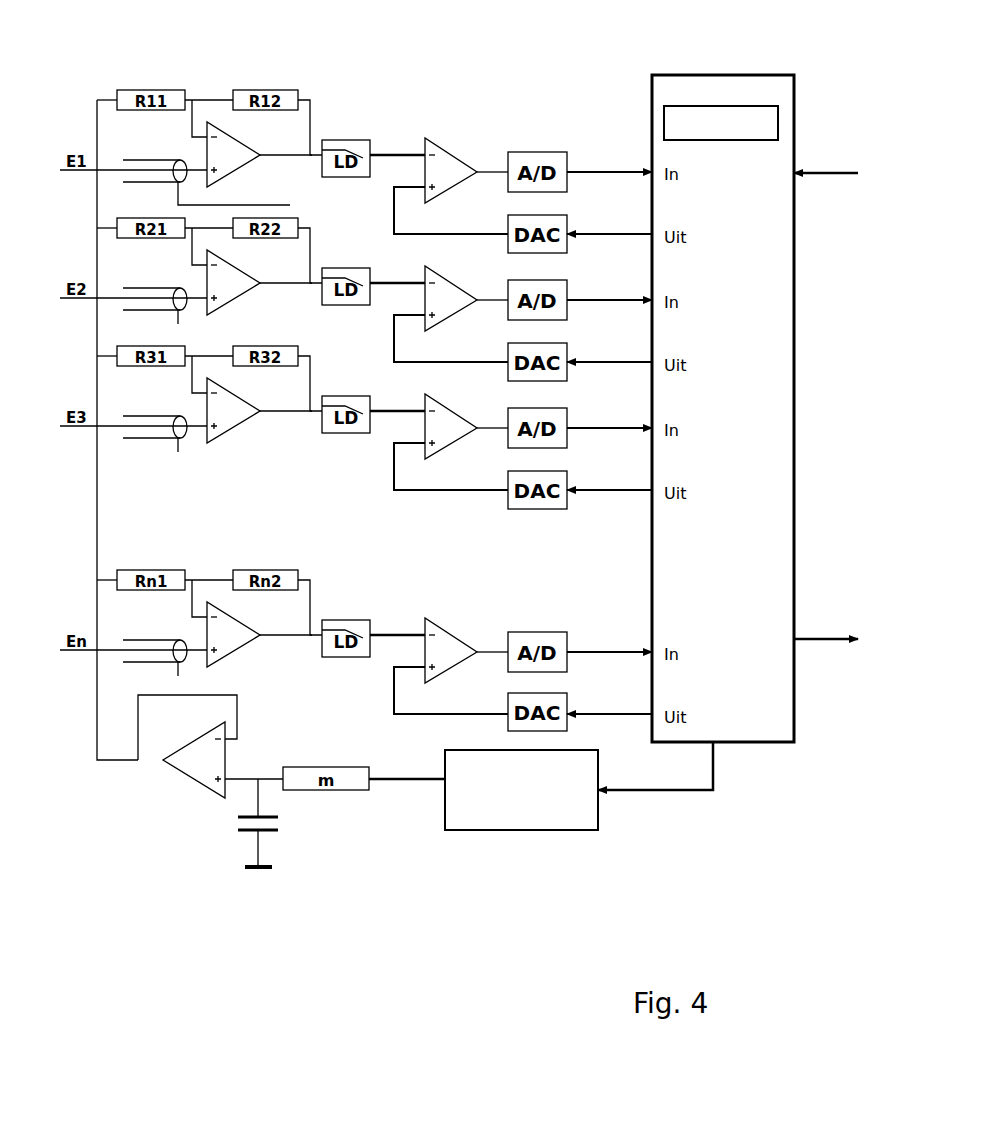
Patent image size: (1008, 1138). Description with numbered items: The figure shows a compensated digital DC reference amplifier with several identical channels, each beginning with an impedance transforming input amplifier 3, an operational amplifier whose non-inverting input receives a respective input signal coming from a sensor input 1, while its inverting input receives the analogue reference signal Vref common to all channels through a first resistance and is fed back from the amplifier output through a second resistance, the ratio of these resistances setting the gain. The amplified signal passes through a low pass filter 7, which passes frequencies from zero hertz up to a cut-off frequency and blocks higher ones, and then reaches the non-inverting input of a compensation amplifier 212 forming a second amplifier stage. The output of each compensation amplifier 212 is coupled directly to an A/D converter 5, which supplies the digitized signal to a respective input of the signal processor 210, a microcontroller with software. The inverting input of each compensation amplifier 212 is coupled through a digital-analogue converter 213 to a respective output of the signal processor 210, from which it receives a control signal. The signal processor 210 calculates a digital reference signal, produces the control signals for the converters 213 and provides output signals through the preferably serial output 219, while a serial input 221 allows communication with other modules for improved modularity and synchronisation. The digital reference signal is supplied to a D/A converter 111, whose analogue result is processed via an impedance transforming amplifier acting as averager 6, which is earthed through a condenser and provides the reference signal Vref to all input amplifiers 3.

The sensor input (electrode) 1 is at (80, 172).
The input amplifier 3 is at (232, 130).
The low pass filter 7 is at (348, 133).
The compensation amplifier 212 is at (448, 150).
The A/D converter 5 is at (552, 133).
The digital-analogue converter 213 is at (565, 250).
The signal processor 210 is at (713, 73).
The serial input 221 is at (825, 173).
The output 219 is at (825, 639).
The D/A converter 111 is at (520, 810).
The analogue averager 6 is at (190, 800).